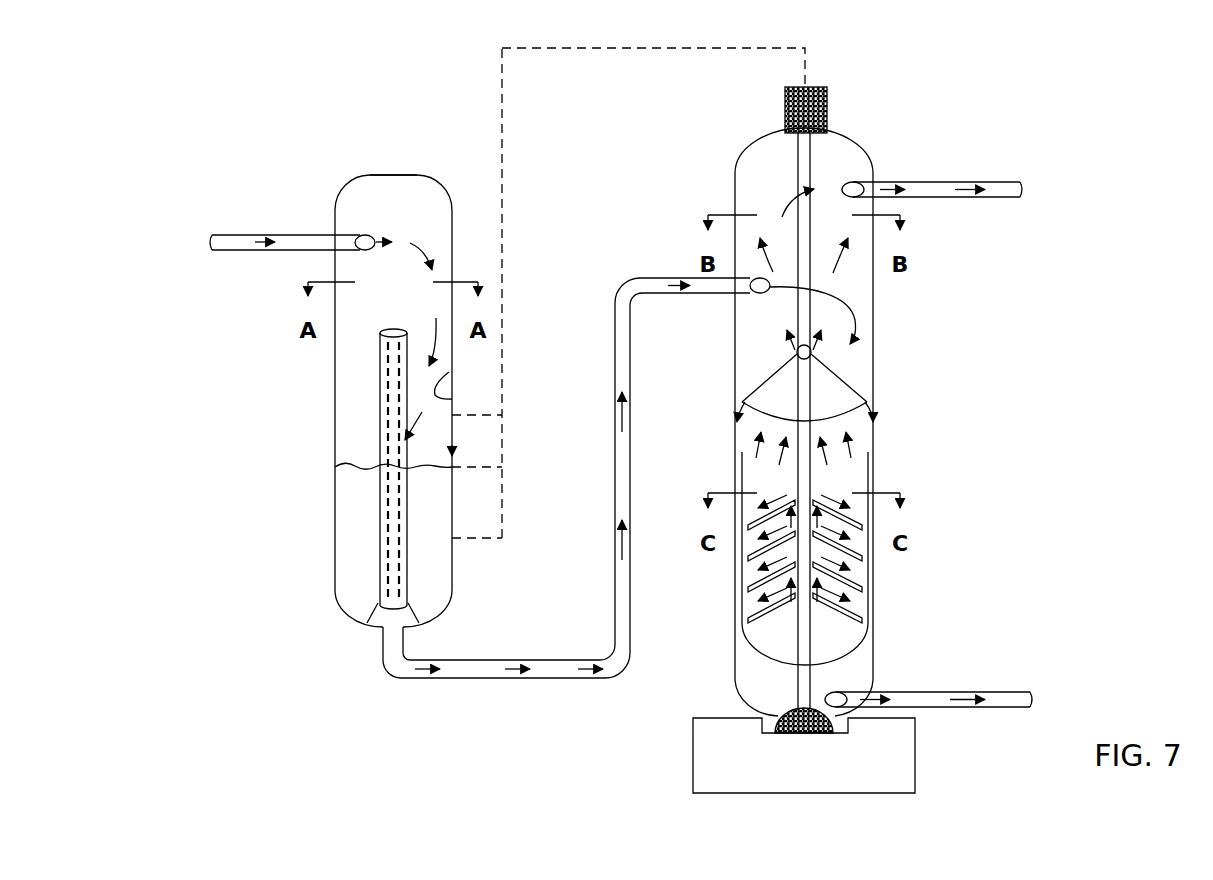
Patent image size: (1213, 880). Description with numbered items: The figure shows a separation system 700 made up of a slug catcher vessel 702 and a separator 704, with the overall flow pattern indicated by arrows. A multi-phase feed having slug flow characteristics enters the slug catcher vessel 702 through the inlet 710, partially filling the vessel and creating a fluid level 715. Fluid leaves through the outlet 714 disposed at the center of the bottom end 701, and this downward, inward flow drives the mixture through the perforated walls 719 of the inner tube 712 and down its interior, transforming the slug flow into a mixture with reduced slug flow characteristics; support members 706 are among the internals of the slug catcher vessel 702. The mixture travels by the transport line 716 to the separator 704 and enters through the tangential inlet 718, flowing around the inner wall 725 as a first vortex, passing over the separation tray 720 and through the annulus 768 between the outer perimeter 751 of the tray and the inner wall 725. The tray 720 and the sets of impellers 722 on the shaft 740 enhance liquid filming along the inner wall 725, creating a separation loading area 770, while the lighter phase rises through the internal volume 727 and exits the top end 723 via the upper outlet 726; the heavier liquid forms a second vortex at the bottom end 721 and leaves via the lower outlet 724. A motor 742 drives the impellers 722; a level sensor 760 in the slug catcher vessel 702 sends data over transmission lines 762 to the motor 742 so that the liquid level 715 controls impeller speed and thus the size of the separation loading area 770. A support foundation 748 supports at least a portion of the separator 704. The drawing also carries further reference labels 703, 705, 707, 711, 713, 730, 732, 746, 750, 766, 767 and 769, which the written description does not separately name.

The system 700 is at (270, 100).
The bottom end 701 is at (348, 614).
The slug catcher vessel 702 is at (440, 185).
The upper end of first vessel 703 is at (392, 172).
The separator 704 is at (875, 160).
The flow recirculation 705 is at (453, 399).
The support members 706 is at (410, 622).
The upper chamber of first vessel 707 is at (368, 195).
The inlet 710 is at (226, 232).
The flow direction arrows 711 is at (415, 243).
The inner tube 712 is at (378, 417).
The first heating element 713 is at (390, 388).
The outlet 714 is at (385, 640).
The fluid level 715 is at (355, 470).
The transport line 716 is at (557, 660).
The tangential inlet 718 is at (752, 293).
The perforated walls 719 is at (378, 518).
The separation tray 720 is at (782, 383).
The bottom end 721 is at (745, 702).
The impellers 722 is at (860, 525).
The top end 723 is at (753, 140).
The lower outlet 724 is at (1010, 690).
The inner wall 725 is at (748, 466).
The upper outlet 726 is at (1005, 178).
The internal volume 727 is at (762, 173).
The heater tube 730 is at (375, 336).
The flow toward outlet 732 is at (370, 598).
The shaft 740 is at (818, 637).
The motor 742 is at (815, 85).
The lower bearing/seal 746 is at (815, 735).
The support foundation 748 is at (722, 786).
The hub 750 is at (842, 349).
The outer perimeter 751 is at (850, 430).
The level sensor 760 is at (460, 470).
The transmission lines 762 is at (587, 52).
The feed stream 766 is at (858, 308).
The downward flow arrows 767 is at (745, 400).
The annulus 768 is at (868, 402).
The vapor flow arrows 769 is at (856, 340).
The separation loading area 770 is at (848, 652).